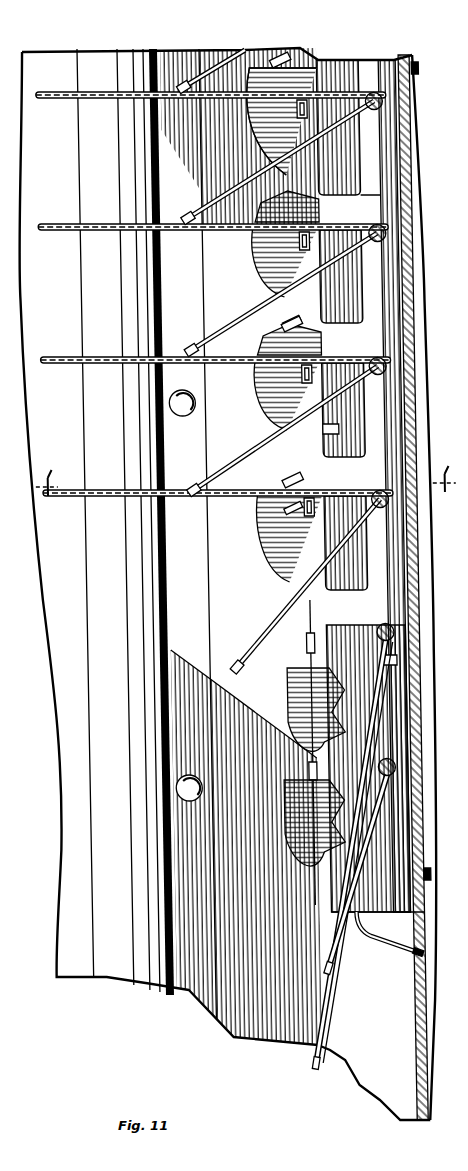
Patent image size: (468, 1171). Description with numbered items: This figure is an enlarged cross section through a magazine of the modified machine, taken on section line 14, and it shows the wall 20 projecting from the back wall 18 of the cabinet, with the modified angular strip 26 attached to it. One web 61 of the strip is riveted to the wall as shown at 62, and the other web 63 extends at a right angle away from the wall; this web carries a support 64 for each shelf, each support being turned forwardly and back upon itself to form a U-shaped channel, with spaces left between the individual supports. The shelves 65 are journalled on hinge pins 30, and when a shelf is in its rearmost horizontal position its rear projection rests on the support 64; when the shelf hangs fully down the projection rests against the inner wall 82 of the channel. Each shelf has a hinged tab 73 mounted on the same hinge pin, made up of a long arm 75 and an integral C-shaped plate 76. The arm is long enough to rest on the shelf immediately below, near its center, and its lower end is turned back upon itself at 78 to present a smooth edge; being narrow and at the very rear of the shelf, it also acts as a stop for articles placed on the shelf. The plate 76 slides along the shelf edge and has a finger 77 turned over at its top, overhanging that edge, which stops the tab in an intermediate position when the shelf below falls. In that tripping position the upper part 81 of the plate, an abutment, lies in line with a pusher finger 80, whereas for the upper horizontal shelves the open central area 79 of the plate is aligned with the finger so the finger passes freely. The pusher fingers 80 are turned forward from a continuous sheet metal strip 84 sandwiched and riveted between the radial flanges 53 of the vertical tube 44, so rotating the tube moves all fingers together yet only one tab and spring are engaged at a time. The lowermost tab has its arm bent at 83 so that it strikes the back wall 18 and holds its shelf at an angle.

The section line 14- 14 is at (251, 481).
The back wall 18 is at (70, 1007).
The wall 20 is at (418, 112).
The angular strip 26 is at (358, 60).
The hinge pins 30 is at (386, 232).
The vertical tube 44 is at (98, 62).
The radial flanges 53 is at (188, 534).
The web 61 is at (402, 158).
The rivets 62 is at (418, 68).
The web 63 is at (378, 195).
The support 64 is at (303, 462).
The shelves 65 is at (103, 98).
The hinged tab 73 is at (256, 271).
The arm 75 is at (258, 315).
The C-shaped plate 76 is at (270, 241).
The finger 77 is at (290, 55).
The turned-back lower end 78 is at (190, 347).
The open central area 79 is at (272, 278).
The pusher finger 80 is at (278, 334).
The upper part 81 is at (280, 318).
The inner wall 82 is at (320, 432).
The bent portion of arm 83 is at (372, 937).
The continuous sheet metal strip 84 is at (266, 546).